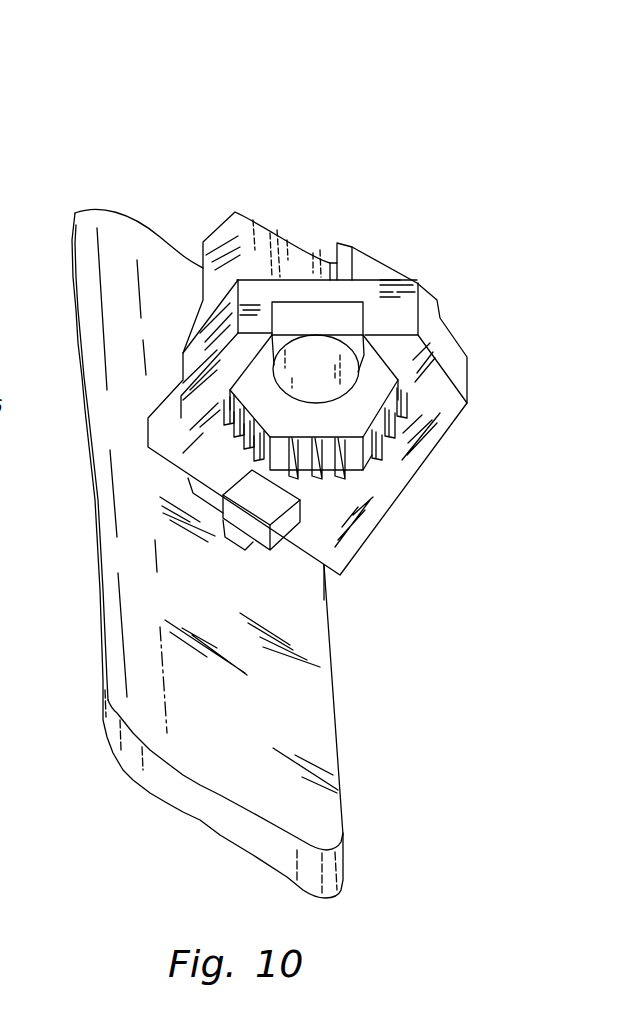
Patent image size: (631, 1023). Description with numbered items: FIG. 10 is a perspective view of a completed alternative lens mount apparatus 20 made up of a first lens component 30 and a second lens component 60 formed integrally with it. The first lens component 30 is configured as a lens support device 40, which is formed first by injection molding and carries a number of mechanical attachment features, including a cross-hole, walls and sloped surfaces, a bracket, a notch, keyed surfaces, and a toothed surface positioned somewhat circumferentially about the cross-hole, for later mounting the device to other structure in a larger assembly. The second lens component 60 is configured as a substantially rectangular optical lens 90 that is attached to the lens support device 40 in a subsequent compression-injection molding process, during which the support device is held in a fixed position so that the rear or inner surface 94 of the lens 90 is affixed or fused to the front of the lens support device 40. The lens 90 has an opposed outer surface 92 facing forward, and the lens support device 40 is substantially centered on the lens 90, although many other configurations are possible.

The lens mount apparatus 20 is at (256, 143).
The first lens component 30 is at (378, 175).
The lens support device 40 is at (432, 222).
The second lens component 60 is at (128, 821).
The optical lens 90 is at (95, 787).
The outer surface 92 is at (105, 712).
The inner surface 94 is at (143, 581).